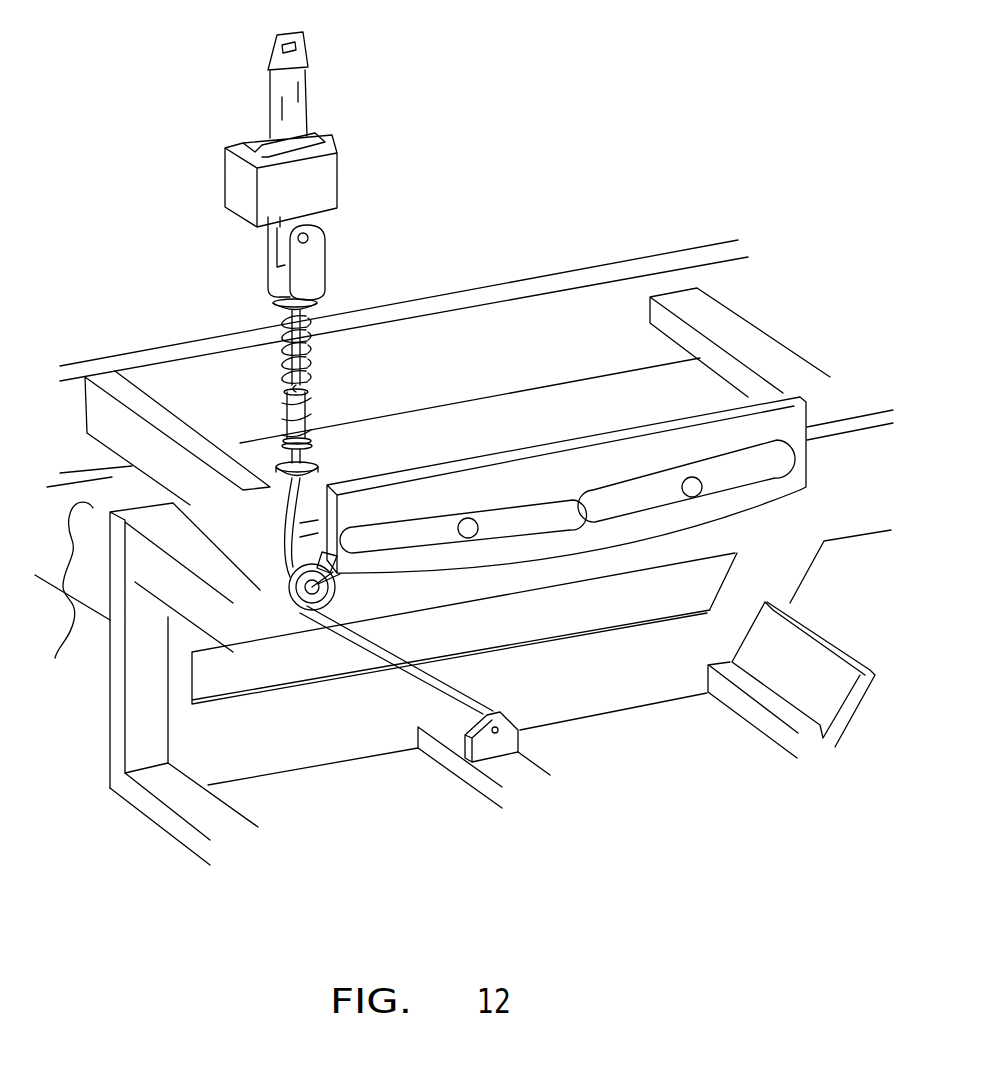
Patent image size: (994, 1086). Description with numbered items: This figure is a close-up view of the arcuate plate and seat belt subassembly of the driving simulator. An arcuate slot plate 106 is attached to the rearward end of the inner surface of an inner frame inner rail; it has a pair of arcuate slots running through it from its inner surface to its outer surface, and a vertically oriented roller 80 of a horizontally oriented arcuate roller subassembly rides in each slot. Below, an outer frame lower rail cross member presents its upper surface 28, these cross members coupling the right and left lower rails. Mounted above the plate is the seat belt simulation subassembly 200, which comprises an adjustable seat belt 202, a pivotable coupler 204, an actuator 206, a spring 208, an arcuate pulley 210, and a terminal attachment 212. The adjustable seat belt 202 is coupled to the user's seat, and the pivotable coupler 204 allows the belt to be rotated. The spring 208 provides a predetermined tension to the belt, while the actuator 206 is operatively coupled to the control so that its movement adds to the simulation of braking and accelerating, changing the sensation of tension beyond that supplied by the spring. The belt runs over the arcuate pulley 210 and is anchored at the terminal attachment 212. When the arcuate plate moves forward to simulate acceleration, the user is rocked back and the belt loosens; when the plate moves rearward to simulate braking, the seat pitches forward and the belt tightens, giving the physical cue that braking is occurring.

The upper surface 28 is at (464, 552).
The vertically oriented roller 80 is at (470, 514).
The arcuate slot plate 106 is at (578, 461).
The seat belt simulation subassembly 200 is at (400, 155).
The adjustable seat belt 202 is at (305, 97).
The pivotable coupler 204 is at (313, 243).
The actuator 206 is at (307, 397).
The spring 208 is at (267, 342).
The arcuate pulley 210 is at (304, 606).
The terminal attachment 212 is at (522, 740).